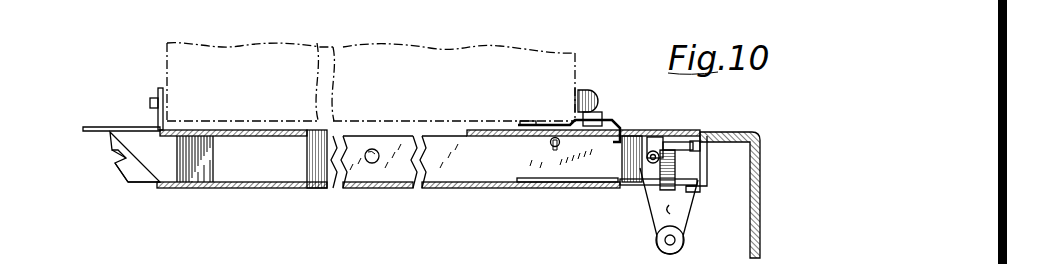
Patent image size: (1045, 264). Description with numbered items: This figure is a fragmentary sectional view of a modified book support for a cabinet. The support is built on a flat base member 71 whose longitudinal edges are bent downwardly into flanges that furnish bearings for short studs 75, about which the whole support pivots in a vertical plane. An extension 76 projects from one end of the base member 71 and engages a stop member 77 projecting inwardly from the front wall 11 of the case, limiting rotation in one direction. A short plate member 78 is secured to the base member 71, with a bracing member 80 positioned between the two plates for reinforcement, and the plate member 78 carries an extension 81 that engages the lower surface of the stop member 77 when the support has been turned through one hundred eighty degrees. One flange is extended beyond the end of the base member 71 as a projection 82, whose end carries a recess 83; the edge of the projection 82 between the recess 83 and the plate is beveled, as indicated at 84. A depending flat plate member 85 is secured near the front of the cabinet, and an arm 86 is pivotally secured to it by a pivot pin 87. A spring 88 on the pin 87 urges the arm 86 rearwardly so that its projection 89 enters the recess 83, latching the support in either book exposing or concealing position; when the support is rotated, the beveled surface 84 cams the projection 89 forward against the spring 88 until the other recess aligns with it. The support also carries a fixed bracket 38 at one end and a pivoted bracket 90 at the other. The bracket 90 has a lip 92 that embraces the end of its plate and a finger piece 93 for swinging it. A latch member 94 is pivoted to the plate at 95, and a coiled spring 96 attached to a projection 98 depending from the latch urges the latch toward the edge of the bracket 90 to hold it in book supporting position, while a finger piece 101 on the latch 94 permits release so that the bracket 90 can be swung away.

The front wall 11 is at (760, 251).
The fixed bracket 38 is at (158, 91).
The base member 71 is at (434, 188).
The studs 75 is at (369, 164).
The extension 76 is at (678, 178).
The stop member 77 is at (694, 192).
The short plate member 78 is at (273, 128).
The bracing member 80 is at (138, 141).
The extension 81 is at (104, 126).
The projection 82 is at (142, 174).
The recess 83 is at (118, 153).
The beveled edge 84 is at (127, 176).
The depending flat plate member 85 is at (663, 206).
The arm 86 is at (656, 226).
The pivot pin 87 is at (685, 243).
The spring 88 is at (672, 209).
The projection 89 is at (660, 155).
The pivoted bracket 90 is at (581, 90).
The lip 92 is at (612, 143).
The finger piece 93 is at (596, 95).
The latch member 94 is at (553, 124).
The pivot 95 is at (522, 122).
The coiled spring 96 is at (551, 145).
The projection 98 is at (553, 149).
The finger piece 101 is at (606, 112).